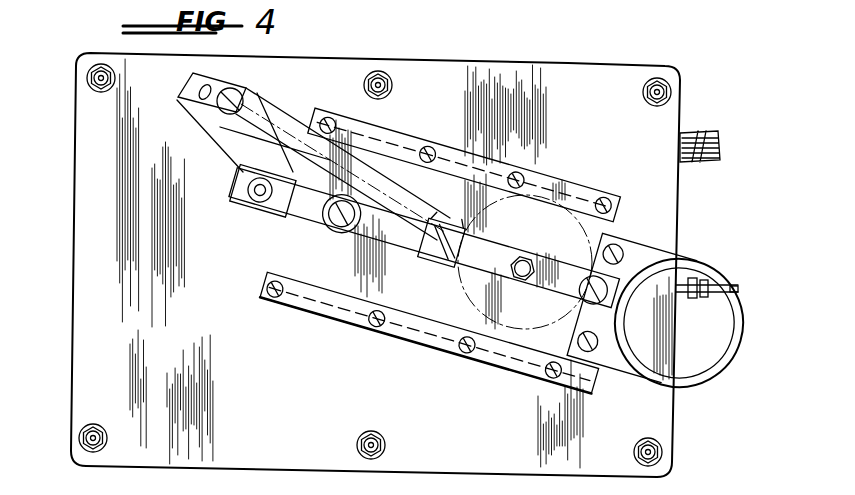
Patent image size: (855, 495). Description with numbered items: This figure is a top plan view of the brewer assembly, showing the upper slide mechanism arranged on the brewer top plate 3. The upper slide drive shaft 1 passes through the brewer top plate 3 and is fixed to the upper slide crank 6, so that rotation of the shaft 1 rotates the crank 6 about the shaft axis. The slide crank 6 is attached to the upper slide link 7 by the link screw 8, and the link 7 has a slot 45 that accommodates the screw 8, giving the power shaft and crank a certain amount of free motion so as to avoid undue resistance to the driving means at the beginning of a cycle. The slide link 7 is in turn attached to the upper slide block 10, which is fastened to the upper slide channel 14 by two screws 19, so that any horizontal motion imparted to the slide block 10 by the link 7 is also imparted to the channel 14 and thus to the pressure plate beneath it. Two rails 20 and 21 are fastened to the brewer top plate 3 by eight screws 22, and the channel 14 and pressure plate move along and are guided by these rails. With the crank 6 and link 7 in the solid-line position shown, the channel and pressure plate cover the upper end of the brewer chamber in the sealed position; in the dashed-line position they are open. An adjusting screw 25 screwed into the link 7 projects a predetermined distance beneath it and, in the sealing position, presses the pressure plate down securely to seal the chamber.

The upper slide drive shaft 1 is at (240, 206).
The brewer top plate 3 is at (681, 198).
The upper slide crank 6 is at (192, 151).
The upper slide link 7 is at (268, 118).
The link screw 8 is at (243, 103).
The upper slide block 10 is at (702, 262).
The upper slide channel 14 is at (270, 254).
The screws 19 is at (622, 246).
The rail 20 is at (282, 303).
The rail 21 is at (333, 118).
The screws 22 is at (262, 287).
The adjusting screw 25 is at (522, 258).
The slot 45 is at (318, 227).